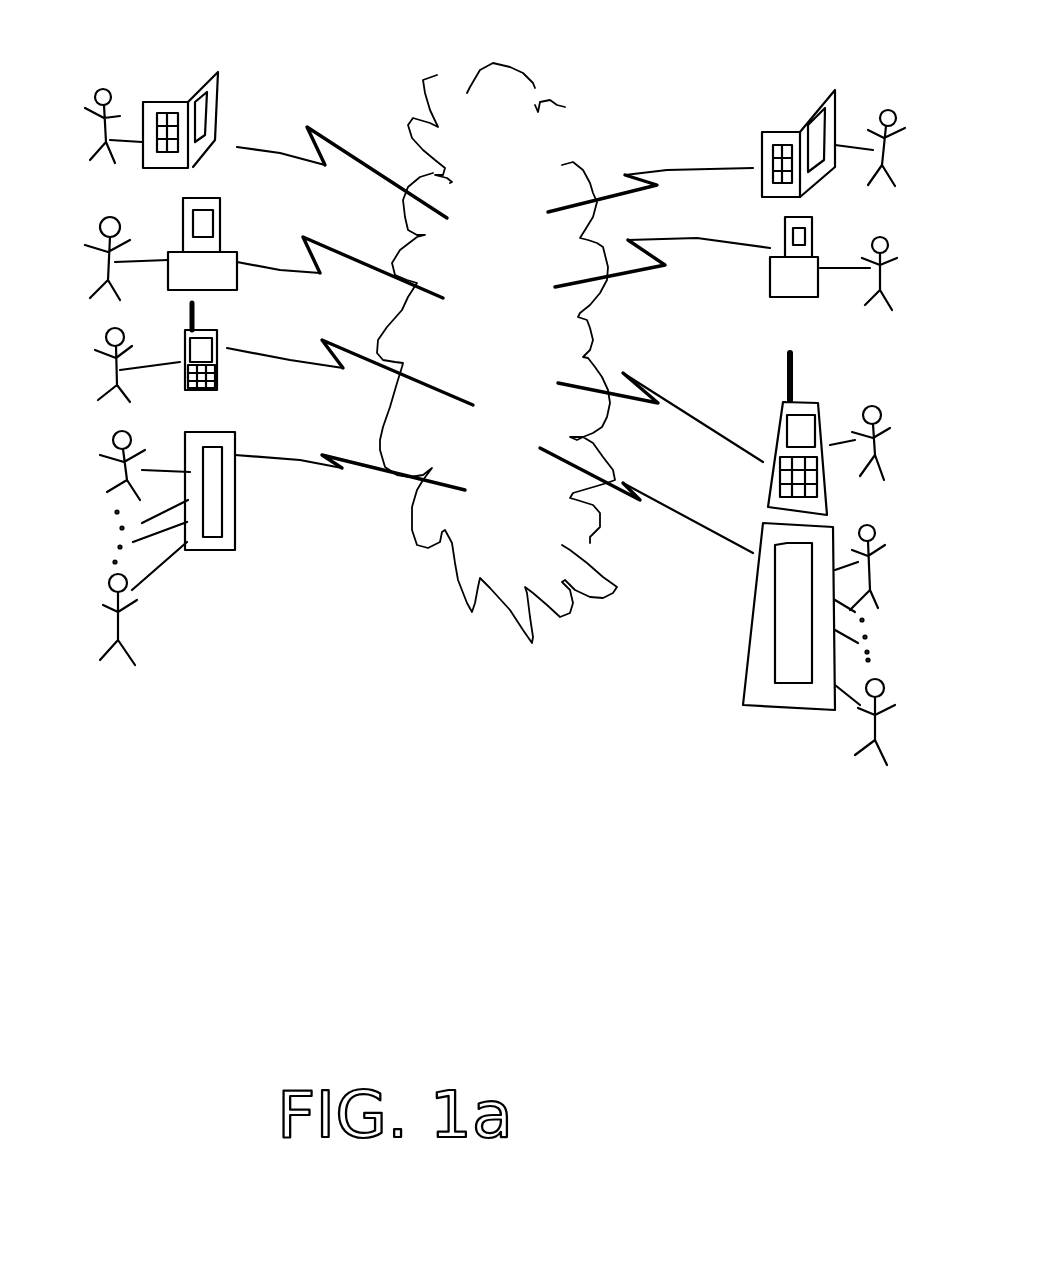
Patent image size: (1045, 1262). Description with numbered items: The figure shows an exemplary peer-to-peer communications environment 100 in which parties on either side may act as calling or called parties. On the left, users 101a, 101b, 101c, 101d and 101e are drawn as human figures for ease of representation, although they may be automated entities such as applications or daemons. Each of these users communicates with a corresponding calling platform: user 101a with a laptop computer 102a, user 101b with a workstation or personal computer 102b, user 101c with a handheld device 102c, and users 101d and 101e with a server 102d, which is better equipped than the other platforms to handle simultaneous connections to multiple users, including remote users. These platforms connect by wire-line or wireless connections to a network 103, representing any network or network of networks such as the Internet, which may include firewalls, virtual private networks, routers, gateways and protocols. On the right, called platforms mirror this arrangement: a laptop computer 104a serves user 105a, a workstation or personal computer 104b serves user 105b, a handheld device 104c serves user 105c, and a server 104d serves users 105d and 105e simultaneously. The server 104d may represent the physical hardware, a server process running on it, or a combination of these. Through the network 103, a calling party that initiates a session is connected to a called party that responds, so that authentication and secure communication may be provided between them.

The communication system 100 is at (502, 1008).
The calling user 101a is at (104, 102).
The calling user 101b is at (103, 236).
The calling user 101c is at (113, 348).
The calling user 101d is at (114, 450).
The calling user 101e is at (139, 644).
The calling platform 102a is at (217, 104).
The calling platform 102b is at (217, 231).
The calling platform 102c is at (231, 345).
The calling platform 102d is at (263, 476).
The network 103 is at (555, 622).
The called platform 104a is at (749, 143).
The called platform 104b is at (749, 251).
The called platform 104c is at (739, 434).
The called platform 104d is at (741, 596).
The called user 105a is at (895, 127).
The called user 105b is at (879, 252).
The called user 105c is at (880, 421).
The called user 105d is at (876, 545).
The called user 105e is at (878, 747).